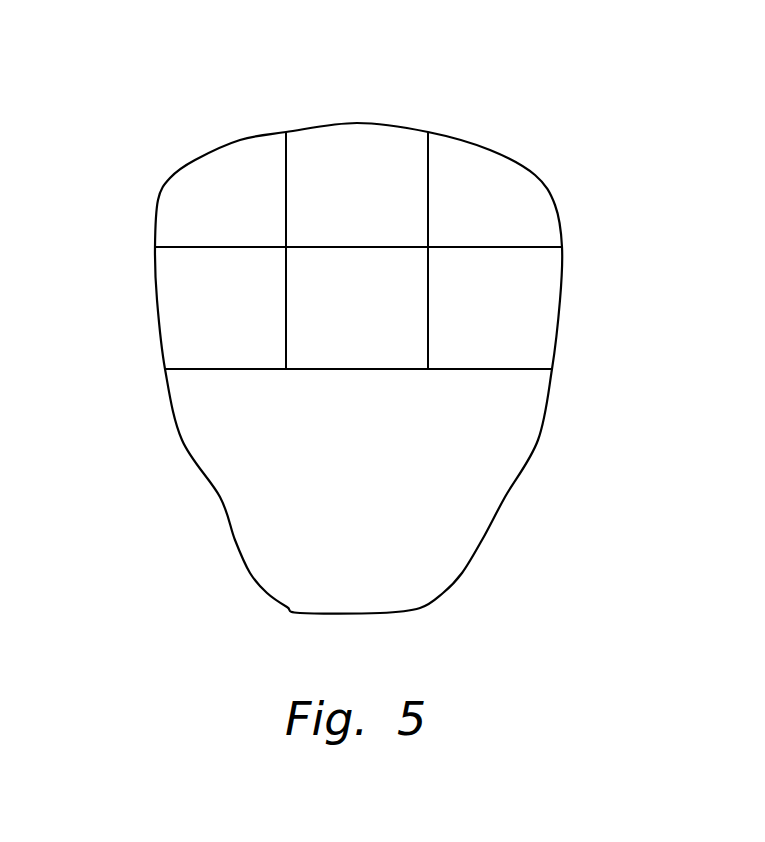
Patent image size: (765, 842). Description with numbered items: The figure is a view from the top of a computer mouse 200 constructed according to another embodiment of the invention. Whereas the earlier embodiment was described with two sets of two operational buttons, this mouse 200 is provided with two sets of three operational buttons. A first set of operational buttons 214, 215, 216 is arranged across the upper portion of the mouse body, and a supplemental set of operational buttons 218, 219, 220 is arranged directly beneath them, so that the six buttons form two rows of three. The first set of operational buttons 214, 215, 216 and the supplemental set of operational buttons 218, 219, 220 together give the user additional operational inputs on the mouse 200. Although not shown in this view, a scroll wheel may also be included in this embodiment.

The mouse 200 is at (527, 63).
The operational button 214 is at (185, 202).
The operational button 215 is at (352, 148).
The operational button 216 is at (532, 193).
The operational button 218 is at (173, 320).
The operational button 219 is at (363, 352).
The operational button 220 is at (537, 312).